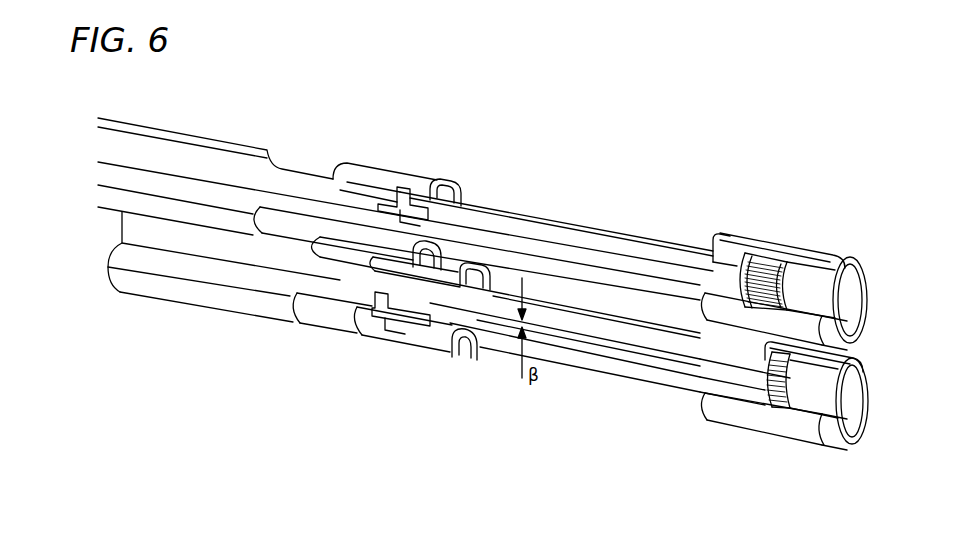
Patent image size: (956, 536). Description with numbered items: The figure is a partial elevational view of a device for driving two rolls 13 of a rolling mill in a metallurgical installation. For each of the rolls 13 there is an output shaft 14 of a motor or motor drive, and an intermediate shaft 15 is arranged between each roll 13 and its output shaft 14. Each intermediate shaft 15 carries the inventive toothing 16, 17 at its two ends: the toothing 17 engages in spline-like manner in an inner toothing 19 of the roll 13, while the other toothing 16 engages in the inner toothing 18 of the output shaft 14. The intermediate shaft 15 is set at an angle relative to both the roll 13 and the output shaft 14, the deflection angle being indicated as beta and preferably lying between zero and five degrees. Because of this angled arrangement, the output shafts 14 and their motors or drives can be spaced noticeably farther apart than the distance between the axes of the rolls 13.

The roll 13 is at (867, 280).
The output shaft 14 is at (305, 190).
The intermediate shaft 15 is at (600, 322).
The toothing 16 is at (727, 245).
The toothing 17 is at (418, 195).
The inner toothing 18 is at (772, 282).
The inner toothing 19 is at (415, 185).